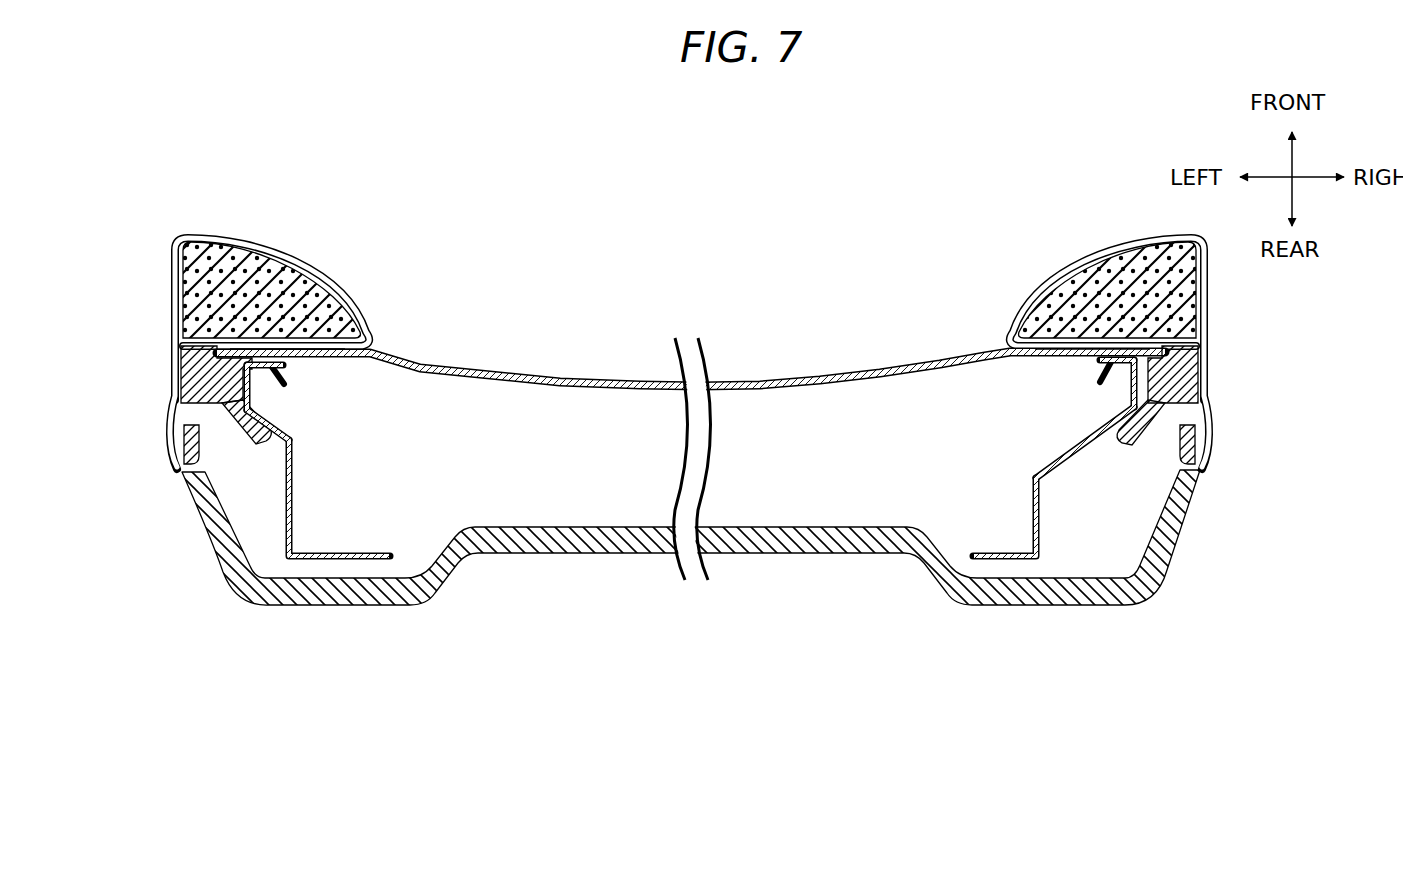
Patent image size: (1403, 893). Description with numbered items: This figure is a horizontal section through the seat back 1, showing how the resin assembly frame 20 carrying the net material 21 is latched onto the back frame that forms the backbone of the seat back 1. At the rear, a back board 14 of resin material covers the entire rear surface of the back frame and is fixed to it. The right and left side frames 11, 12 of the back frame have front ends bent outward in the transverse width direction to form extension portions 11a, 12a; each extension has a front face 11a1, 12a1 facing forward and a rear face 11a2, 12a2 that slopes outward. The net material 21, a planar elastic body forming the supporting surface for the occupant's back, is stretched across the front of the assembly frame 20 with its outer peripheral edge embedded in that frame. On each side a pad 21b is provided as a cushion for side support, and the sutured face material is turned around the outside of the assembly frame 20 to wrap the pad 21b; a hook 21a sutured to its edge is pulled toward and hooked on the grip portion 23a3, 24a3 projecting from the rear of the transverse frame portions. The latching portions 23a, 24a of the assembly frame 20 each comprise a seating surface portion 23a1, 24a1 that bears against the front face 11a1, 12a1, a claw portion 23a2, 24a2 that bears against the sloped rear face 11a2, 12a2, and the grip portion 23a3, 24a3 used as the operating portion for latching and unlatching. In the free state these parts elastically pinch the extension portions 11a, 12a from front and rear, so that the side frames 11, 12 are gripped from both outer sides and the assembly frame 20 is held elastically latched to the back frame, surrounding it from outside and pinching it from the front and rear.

The seat back 1 is at (184, 175).
The assembly frame 20 is at (196, 358).
The net material 21 is at (482, 369).
The hook 21a is at (176, 471).
The pad 21b is at (247, 270).
The latching portion 23a is at (213, 375).
The seating surface portion 23a1 is at (270, 322).
The claw portion 23a2 is at (252, 428).
The grip portion 23a3 is at (170, 444).
The side frame 11 is at (293, 494).
The extension portion 11a is at (262, 405).
The front face 11a1 is at (288, 373).
The rear face 11a2 is at (293, 453).
The back board 14 is at (555, 542).
The side frame 12 is at (1032, 502).
The extension portion 12a is at (1126, 392).
The front face 12a1 is at (1098, 368).
The rear face 12a2 is at (1096, 462).
The latching portion 24a is at (1172, 372).
The seating surface portion 24a1 is at (1112, 330).
The claw portion 24a2 is at (1131, 424).
The grip portion 24a3 is at (1209, 444).